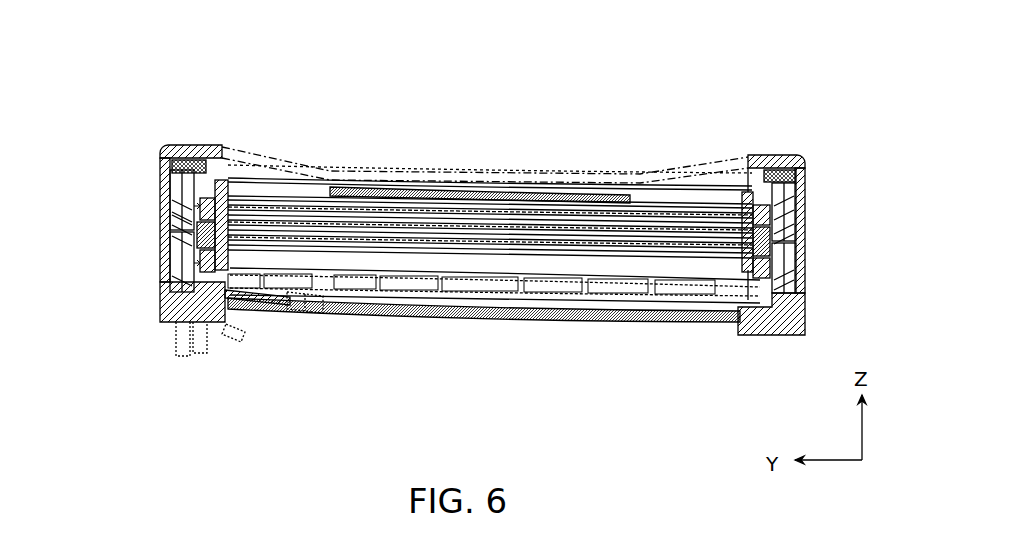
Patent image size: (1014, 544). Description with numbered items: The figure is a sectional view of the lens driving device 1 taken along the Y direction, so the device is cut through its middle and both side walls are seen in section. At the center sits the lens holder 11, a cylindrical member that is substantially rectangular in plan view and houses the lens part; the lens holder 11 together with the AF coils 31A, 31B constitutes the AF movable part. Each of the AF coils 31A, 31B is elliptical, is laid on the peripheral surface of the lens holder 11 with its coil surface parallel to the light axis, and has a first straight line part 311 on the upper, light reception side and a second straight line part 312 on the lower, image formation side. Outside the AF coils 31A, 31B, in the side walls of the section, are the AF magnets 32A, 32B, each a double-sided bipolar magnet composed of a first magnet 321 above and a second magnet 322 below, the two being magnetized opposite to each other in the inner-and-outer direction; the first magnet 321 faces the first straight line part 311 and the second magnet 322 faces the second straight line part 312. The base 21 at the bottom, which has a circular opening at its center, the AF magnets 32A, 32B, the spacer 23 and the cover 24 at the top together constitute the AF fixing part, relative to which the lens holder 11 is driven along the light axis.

The lens driving device 1 is at (834, 86).
The lens holder 11 is at (443, 215).
The base 21 is at (425, 303).
The spacer 23 is at (778, 160).
The cover 24 is at (191, 148).
The AF coil 31A is at (362, 97).
The AF coil 31B is at (690, 99).
The first straight line part 311 is at (228, 193).
The second straight line part 312 is at (228, 255).
The AF magnet 32A is at (85, 200).
The AF magnet 32B is at (885, 195).
The first magnet 321 is at (166, 212).
The second magnet 322 is at (166, 272).